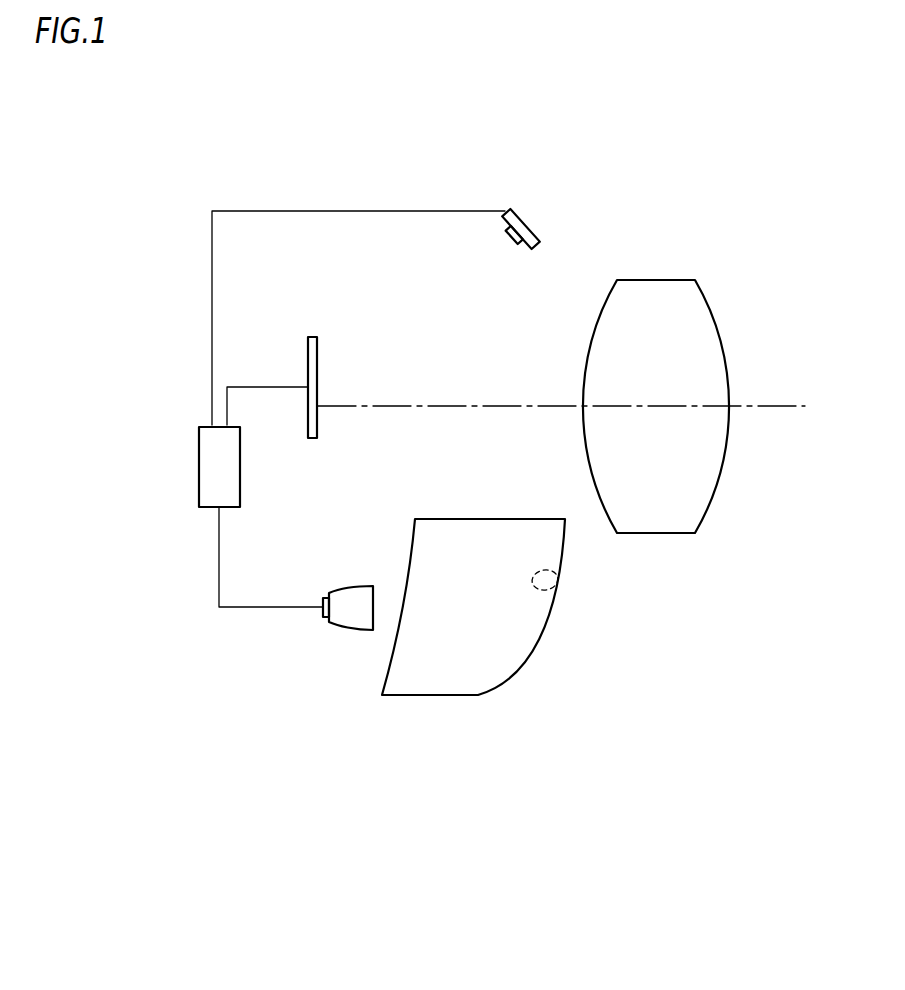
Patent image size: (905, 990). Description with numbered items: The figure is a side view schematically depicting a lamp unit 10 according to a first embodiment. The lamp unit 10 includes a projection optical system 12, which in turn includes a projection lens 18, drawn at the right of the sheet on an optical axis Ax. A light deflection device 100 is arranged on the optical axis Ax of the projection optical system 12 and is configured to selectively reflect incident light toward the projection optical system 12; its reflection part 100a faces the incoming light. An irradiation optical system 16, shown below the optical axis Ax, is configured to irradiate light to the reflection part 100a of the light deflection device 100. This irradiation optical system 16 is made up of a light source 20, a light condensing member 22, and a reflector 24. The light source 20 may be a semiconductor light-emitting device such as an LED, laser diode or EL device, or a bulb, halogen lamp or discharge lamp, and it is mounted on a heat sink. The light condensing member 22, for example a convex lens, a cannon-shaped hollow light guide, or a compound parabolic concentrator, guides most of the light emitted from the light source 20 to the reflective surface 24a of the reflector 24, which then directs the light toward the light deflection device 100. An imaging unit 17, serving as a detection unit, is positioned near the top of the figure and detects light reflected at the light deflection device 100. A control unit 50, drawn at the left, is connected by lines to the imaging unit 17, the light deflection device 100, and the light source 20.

The lamp unit 10 is at (490, 827).
The projection optical system 12 is at (575, 254).
The irradiation optical system 16 is at (370, 713).
The imaging unit 17 is at (527, 208).
The projection lens 18 is at (655, 281).
The light source 20 is at (323, 608).
The light condensing member 22 is at (352, 587).
The reflector 24 is at (527, 652).
The reflective surface 24a is at (556, 572).
The control unit 50 is at (200, 470).
The light deflection device 100 is at (308, 356).
The reflection part 100a is at (318, 378).
The optical axis Ax is at (801, 406).